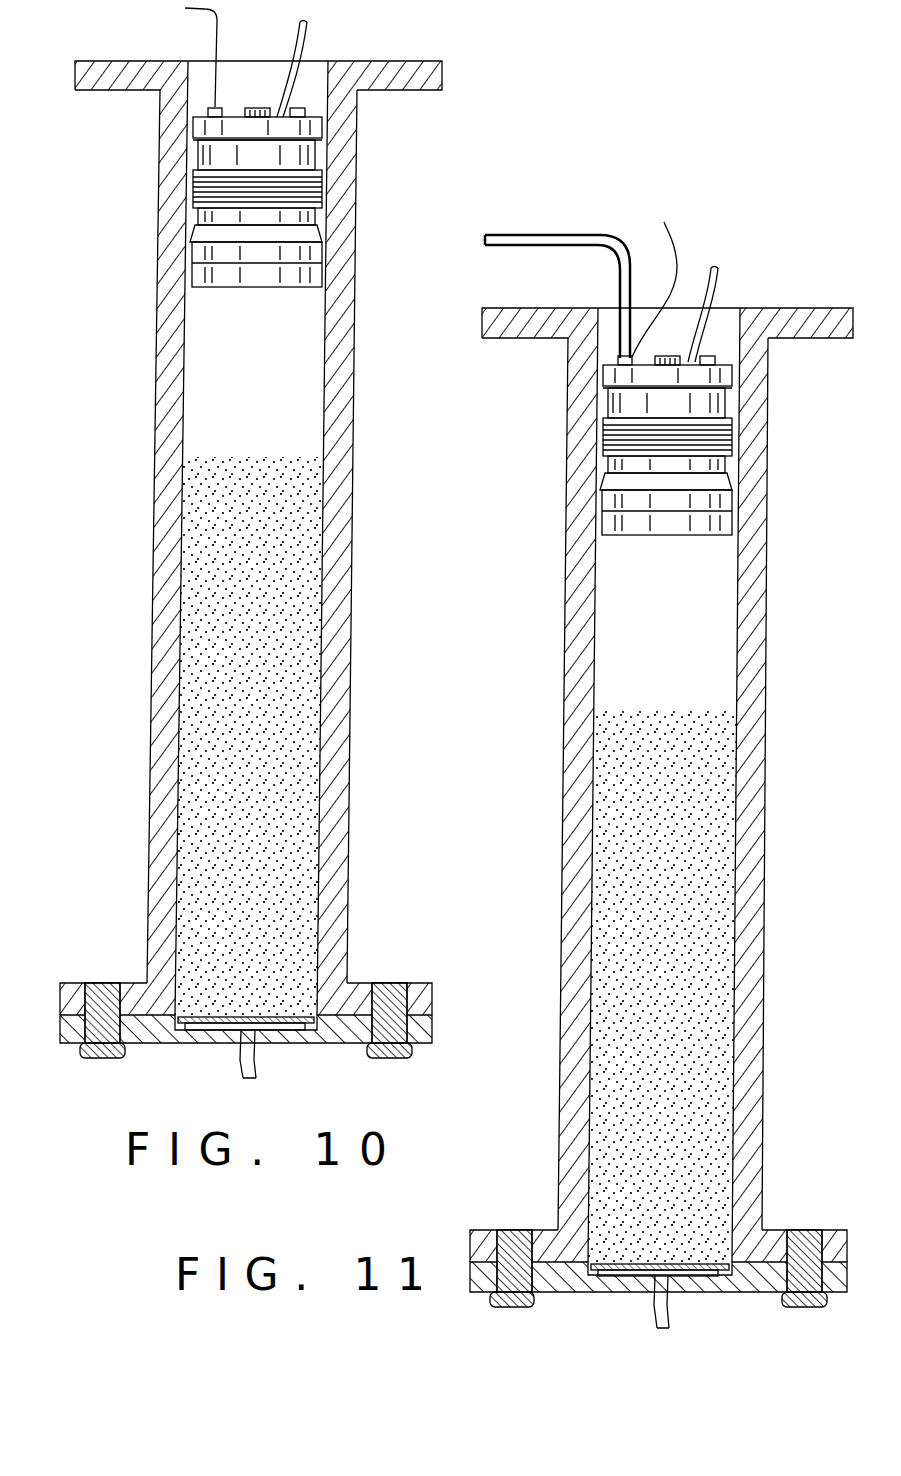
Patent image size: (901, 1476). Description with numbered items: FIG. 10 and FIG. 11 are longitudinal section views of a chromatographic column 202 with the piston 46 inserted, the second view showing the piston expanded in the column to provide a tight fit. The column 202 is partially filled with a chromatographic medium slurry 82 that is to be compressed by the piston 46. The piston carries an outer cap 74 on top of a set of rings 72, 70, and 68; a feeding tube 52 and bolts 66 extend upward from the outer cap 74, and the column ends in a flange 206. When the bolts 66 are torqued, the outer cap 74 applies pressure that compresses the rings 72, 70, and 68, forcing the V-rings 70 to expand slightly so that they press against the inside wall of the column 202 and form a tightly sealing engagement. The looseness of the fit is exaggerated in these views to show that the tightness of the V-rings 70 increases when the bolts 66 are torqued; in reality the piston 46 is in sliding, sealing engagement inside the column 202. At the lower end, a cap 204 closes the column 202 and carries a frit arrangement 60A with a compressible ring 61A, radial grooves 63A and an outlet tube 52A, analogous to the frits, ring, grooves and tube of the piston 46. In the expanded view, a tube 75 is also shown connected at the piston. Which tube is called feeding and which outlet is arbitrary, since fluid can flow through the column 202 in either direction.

In FIG. 10, the piston 46 is at (207, 270).
In FIG. 11, the piston 46 is at (617, 503).
In FIG. 10, the feeding tube 52 is at (307, 42).
In FIG. 11, the feeding tube 52 is at (720, 283).
In FIG. 10, the outlet tube 52A is at (247, 1080).
In FIG. 11, the outlet tube 52A is at (652, 1307).
In FIG. 10, the frit arrangement 60A is at (285, 1015).
In FIG. 11, the frit arrangement 60A is at (703, 1262).
In FIG. 10, the compressible ring 61A is at (178, 1043).
In FIG. 11, the compressible ring 61A is at (735, 1280).
In FIG. 10, the radial grooves 63A is at (283, 1030).
In FIG. 11, the radial grooves 63A is at (677, 1293).
In FIG. 10, the bolts 66 is at (185, 8).
In FIG. 11, the bolts 66 is at (664, 222).
In FIG. 10, the ring 68 is at (320, 233).
In FIG. 11, the ring 68 is at (732, 480).
In FIG. 10, the V-rings 70 is at (320, 198).
In FIG. 11, the V-rings 70 is at (733, 448).
In FIG. 10, the ring 72 is at (315, 152).
In FIG. 11, the ring 72 is at (726, 405).
In FIG. 10, the outer cap 74 is at (317, 120).
In FIG. 11, the outer cap 74 is at (617, 372).
In FIG. 11, the gas tube 75 is at (558, 235).
In FIG. 10, the chromatographic medium slurry 82 is at (280, 847).
In FIG. 11, the chromatographic medium slurry 82 is at (697, 937).
In FIG. 10, the chromatographic column 202 is at (148, 808).
In FIG. 11, the chromatographic column 202 is at (661, 785).
In FIG. 10, the cap 204 is at (155, 1045).
In FIG. 11, the cap 204 is at (553, 1293).
In FIG. 10, the top flange 206 is at (405, 65).